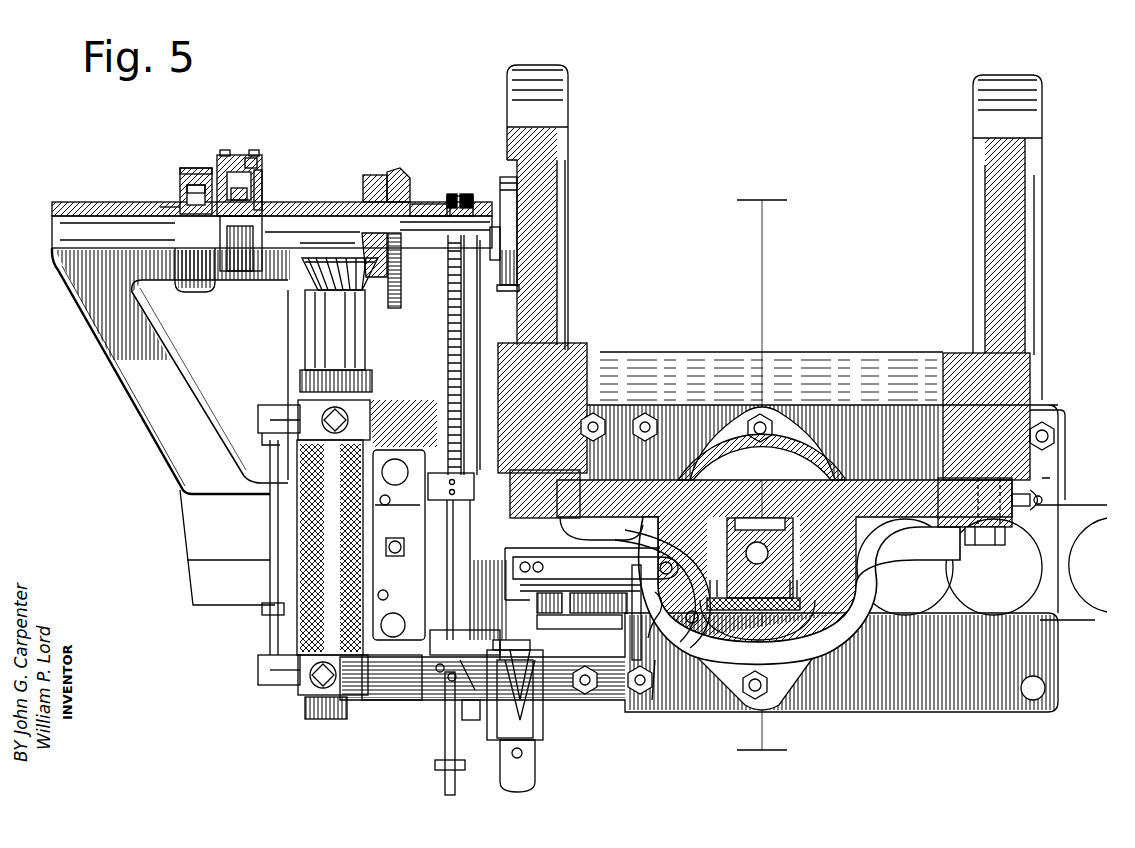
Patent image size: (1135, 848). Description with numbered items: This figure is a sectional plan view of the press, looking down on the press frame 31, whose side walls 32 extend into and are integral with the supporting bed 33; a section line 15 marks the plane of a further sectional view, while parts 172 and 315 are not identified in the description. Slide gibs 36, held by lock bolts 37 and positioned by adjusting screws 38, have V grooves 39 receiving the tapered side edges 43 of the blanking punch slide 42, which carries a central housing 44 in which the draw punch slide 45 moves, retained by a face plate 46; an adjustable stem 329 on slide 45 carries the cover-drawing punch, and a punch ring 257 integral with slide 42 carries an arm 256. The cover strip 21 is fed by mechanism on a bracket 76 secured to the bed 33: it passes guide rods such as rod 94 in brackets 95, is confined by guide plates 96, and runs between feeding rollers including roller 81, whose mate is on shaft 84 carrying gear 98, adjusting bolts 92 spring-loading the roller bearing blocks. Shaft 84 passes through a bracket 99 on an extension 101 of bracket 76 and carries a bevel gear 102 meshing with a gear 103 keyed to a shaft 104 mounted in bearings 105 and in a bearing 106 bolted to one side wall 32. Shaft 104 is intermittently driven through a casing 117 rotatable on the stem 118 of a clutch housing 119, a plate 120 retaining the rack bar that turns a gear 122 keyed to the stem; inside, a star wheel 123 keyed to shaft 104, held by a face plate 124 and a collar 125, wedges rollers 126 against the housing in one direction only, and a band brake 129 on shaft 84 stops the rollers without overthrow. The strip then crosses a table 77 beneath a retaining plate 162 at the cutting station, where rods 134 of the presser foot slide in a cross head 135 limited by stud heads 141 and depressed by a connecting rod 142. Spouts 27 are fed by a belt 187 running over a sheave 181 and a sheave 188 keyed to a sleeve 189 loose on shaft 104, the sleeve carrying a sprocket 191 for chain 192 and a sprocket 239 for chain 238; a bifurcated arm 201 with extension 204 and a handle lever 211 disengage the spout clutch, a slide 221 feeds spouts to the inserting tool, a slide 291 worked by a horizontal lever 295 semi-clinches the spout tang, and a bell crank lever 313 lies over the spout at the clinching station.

The section line 15 is at (762, 483).
The cover strip 21 is at (190, 553).
The spouts 27 is at (508, 668).
The press frame 31 is at (577, 345).
The side walls 32 is at (552, 176).
The supporting bed 33 is at (987, 702).
The slide gibs 36 is at (1044, 482).
The lock bolts 37 is at (985, 542).
The adjusting screws 38 is at (1042, 498).
The V groove 39 is at (946, 498).
The blanking punch slide 42 is at (880, 492).
The tapered side edges 43 is at (594, 502).
The central housing 44 is at (862, 590).
The draw punch slide 45 is at (800, 562).
The face plate 46 is at (793, 622).
The bracket 76 is at (376, 714).
The table 77 is at (580, 583).
The feeding roller 81 is at (330, 547).
The shaft 84 is at (334, 256).
The adjusting bolt 92 is at (330, 422).
The rod 94 is at (272, 527).
The brackets 95 is at (262, 423).
The guide plates 96 is at (262, 612).
The gear 98 is at (300, 382).
The bracket 99 is at (330, 327).
The extension 101 is at (95, 330).
The bevel gear 102 is at (298, 292).
The gear 103 is at (396, 172).
The shaft 104 is at (372, 232).
The bearings 105 is at (64, 203).
The bearing 106 is at (510, 226).
The casing 117 is at (262, 176).
The stem 118 is at (236, 158).
The clutch housing 119 is at (194, 170).
The plate 120 is at (248, 160).
The gear 122 is at (253, 238).
The star wheel 123 is at (182, 200).
The face plate 124 is at (165, 276).
The collar 125 is at (172, 206).
The rollers 126 is at (186, 180).
The band brake mechanism 129 is at (312, 708).
The rods 134 is at (386, 593).
The cross head 135 is at (397, 517).
The head 141 is at (396, 470).
The connecting rod 142 is at (404, 548).
The retaining plate 162 is at (460, 502).
The cylinder 172 is at (532, 773).
The sheave 181 is at (446, 660).
The belt 187 is at (472, 345).
The sheave 188 is at (466, 194).
The sleeve 189 is at (456, 196).
The sprocket 191 is at (420, 204).
The chain 192 is at (392, 312).
The bifurcated arm 201 is at (458, 676).
The extension 204 is at (470, 722).
The handle lever 211 is at (446, 752).
The slide 221 is at (532, 725).
The chain 238 is at (452, 322).
The sprocket 239 is at (458, 194).
The arm 256 is at (658, 556).
The punch ring 257 is at (732, 680).
The slide 291 is at (548, 566).
The horizontal lever 295 is at (560, 698).
The bell crank lever 313 is at (655, 700).
The arm 315 is at (668, 604).
The adjustable stem 329 is at (768, 520).